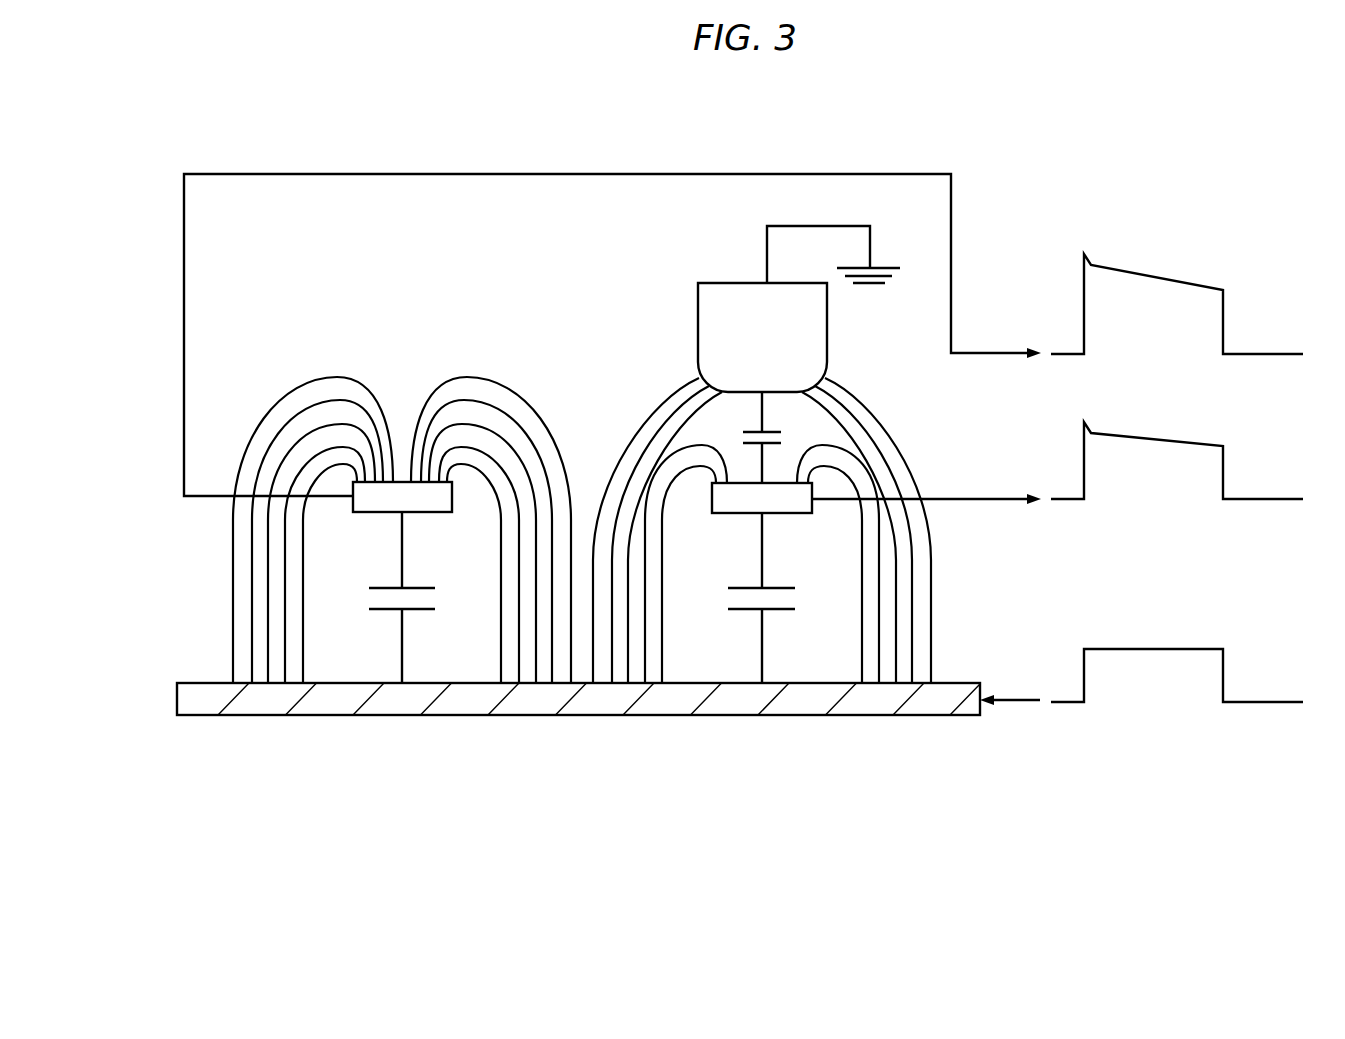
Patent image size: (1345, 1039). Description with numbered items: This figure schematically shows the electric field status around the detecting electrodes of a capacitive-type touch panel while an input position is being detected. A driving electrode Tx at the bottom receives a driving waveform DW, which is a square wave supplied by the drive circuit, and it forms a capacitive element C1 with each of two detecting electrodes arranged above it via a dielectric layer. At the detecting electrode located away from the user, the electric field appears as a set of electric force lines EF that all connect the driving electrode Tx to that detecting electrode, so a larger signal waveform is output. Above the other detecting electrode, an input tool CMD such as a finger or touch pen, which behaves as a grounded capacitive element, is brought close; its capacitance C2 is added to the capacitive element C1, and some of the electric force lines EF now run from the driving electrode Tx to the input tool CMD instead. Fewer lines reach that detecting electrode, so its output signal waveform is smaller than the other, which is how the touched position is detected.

The driving electrode Tx is at (329, 700).
The capacitive element C1 is at (432, 597).
The capacitance of the input tool C2 is at (773, 438).
The input tool CMD is at (707, 337).
The electric force lines EF is at (274, 410).
The driving waveform DW is at (1183, 628).